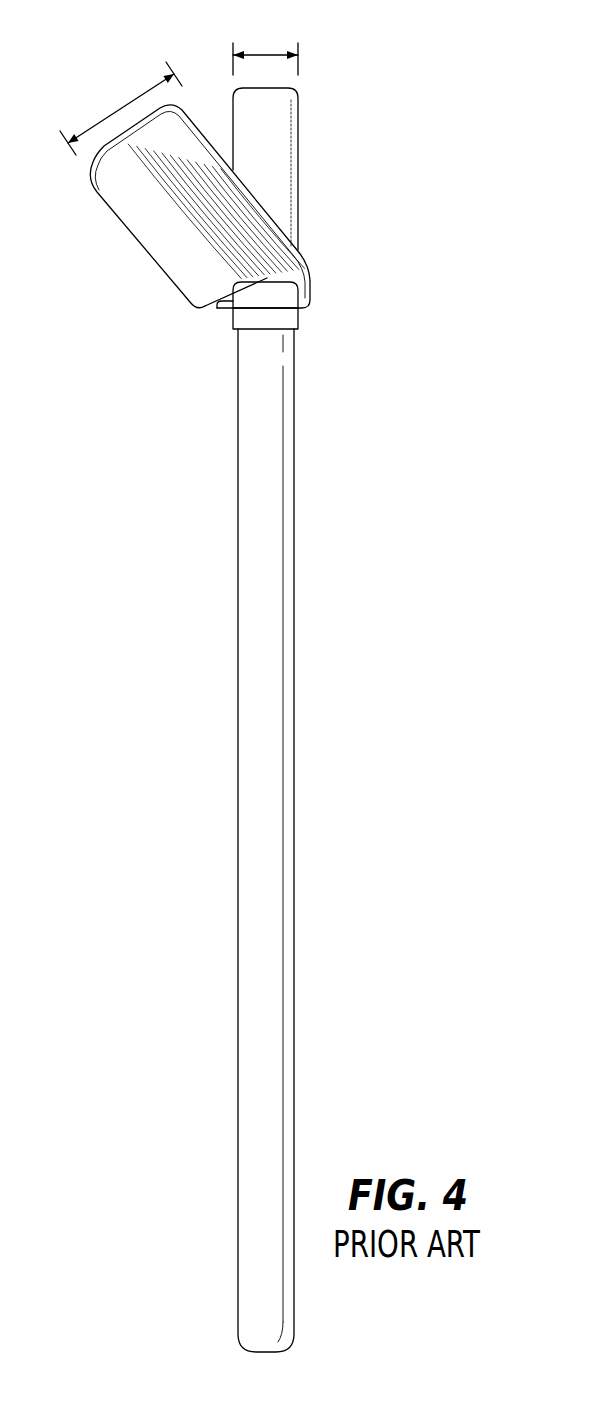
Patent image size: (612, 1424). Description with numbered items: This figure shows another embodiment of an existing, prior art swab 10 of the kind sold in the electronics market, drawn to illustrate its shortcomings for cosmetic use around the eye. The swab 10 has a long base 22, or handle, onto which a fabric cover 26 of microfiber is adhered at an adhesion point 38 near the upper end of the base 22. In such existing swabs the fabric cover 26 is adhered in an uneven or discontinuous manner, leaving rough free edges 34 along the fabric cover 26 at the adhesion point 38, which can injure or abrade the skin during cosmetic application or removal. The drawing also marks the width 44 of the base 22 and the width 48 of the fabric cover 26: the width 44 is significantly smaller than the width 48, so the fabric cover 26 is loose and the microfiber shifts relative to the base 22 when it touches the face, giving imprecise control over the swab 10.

The swab 10 is at (340, 112).
The base 22 is at (258, 875).
The fabric cover 26 is at (135, 195).
The free edges 34 is at (227, 309).
The adhesion point 38 is at (267, 297).
The width of the base 44 is at (267, 53).
The width of the fabric cover 48 is at (120, 107).